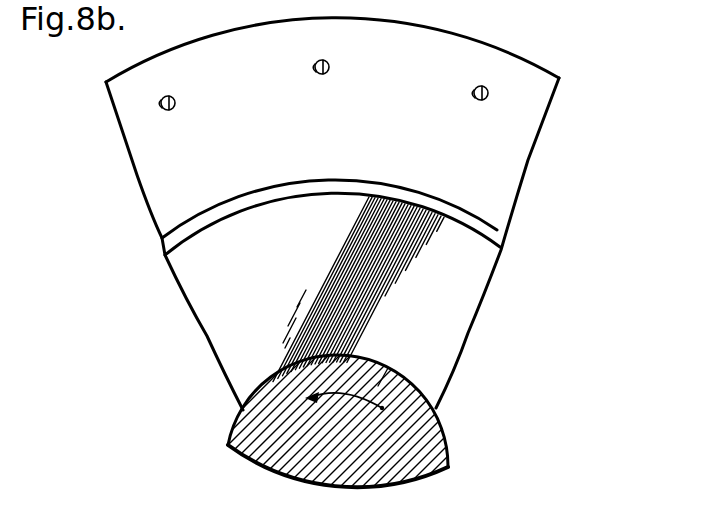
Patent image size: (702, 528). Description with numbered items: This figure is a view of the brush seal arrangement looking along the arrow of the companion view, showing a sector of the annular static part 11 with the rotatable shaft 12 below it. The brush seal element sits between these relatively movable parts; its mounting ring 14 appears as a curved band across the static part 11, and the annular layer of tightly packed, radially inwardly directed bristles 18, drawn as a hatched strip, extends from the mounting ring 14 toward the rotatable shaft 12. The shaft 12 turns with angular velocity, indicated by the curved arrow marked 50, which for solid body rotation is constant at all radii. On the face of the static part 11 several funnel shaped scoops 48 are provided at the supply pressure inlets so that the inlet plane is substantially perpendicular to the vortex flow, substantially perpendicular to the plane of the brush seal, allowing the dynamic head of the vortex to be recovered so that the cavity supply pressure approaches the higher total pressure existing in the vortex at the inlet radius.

The annular static part 11 is at (490, 195).
The rotatable shaft 12 is at (423, 447).
The mounting ring 14 is at (500, 240).
The bristles 18 is at (355, 313).
The funnel shaped scoop 48 is at (164, 108).
The direction of rotation 50 is at (378, 398).